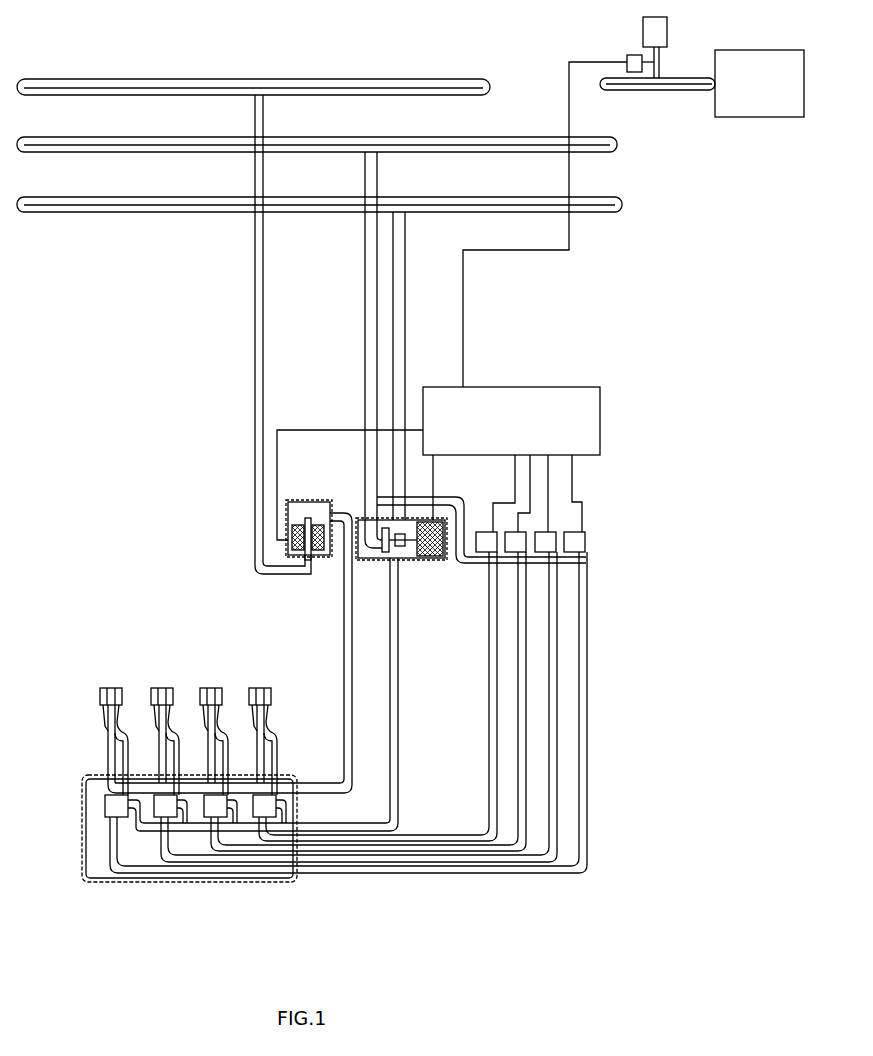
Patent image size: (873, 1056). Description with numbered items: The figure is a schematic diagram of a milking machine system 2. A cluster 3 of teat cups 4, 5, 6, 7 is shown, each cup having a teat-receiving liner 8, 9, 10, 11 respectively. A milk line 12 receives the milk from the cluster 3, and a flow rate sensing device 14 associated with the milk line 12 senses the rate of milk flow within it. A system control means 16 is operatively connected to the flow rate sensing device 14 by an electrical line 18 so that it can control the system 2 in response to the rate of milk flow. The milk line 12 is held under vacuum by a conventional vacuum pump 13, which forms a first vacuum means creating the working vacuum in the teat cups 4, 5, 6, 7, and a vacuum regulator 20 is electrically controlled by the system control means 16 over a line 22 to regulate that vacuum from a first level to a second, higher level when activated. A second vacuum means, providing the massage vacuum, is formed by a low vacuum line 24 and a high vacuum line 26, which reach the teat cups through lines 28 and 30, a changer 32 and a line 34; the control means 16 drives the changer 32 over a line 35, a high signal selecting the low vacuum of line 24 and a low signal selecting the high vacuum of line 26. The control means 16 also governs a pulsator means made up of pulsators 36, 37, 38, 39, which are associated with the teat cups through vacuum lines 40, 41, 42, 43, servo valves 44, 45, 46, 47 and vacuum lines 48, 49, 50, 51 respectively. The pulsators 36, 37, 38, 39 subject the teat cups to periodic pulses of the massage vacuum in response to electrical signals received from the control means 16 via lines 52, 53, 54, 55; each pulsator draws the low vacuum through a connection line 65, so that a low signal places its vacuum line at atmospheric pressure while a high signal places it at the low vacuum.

The milking machine system 2 is at (680, 512).
The cluster 3 is at (83, 713).
The teat cup 4 is at (120, 689).
The teat cup 5 is at (171, 689).
The teat cup 6 is at (220, 689).
The teat cup 7 is at (269, 689).
The teat-receiving liner 8 is at (122, 715).
The teat-receiving liner 9 is at (173, 715).
The teat-receiving liner 10 is at (222, 715).
The teat-receiving liner 11 is at (271, 715).
The milk line 12 is at (426, 79).
The vacuum pump 13 is at (748, 117).
The flow rate sensing device 14 is at (319, 558).
The system control means 16 is at (562, 388).
The electrical line 18 is at (285, 431).
The vacuum regulator 20 is at (668, 28).
The line 22 is at (569, 245).
The low vacuum line 24 is at (441, 146).
The high vacuum line 26 is at (440, 205).
The line 28 is at (365, 311).
The line 30 is at (405, 303).
The changer 32 is at (423, 558).
The line 34 is at (398, 702).
The line 35 is at (433, 475).
The pulsator 36 is at (485, 532).
The pulsator 37 is at (513, 532).
The pulsator 38 is at (543, 560).
The pulsator 39 is at (585, 545).
The vacuum line 40 is at (489, 703).
The vacuum line 41 is at (518, 718).
The vacuum line 42 is at (557, 733).
The vacuum line 43 is at (587, 763).
The servo valve 44 is at (116, 805).
The servo valve 45 is at (169, 808).
The servo valve 46 is at (219, 808).
The servo valve 47 is at (268, 808).
The vacuum line 48 is at (129, 742).
The vacuum line 49 is at (180, 742).
The vacuum line 50 is at (230, 742).
The vacuum line 51 is at (280, 742).
The line 52 is at (503, 503).
The line 53 is at (532, 497).
The line 54 is at (549, 500).
The line 55 is at (584, 509).
The connection line 65 is at (473, 564).